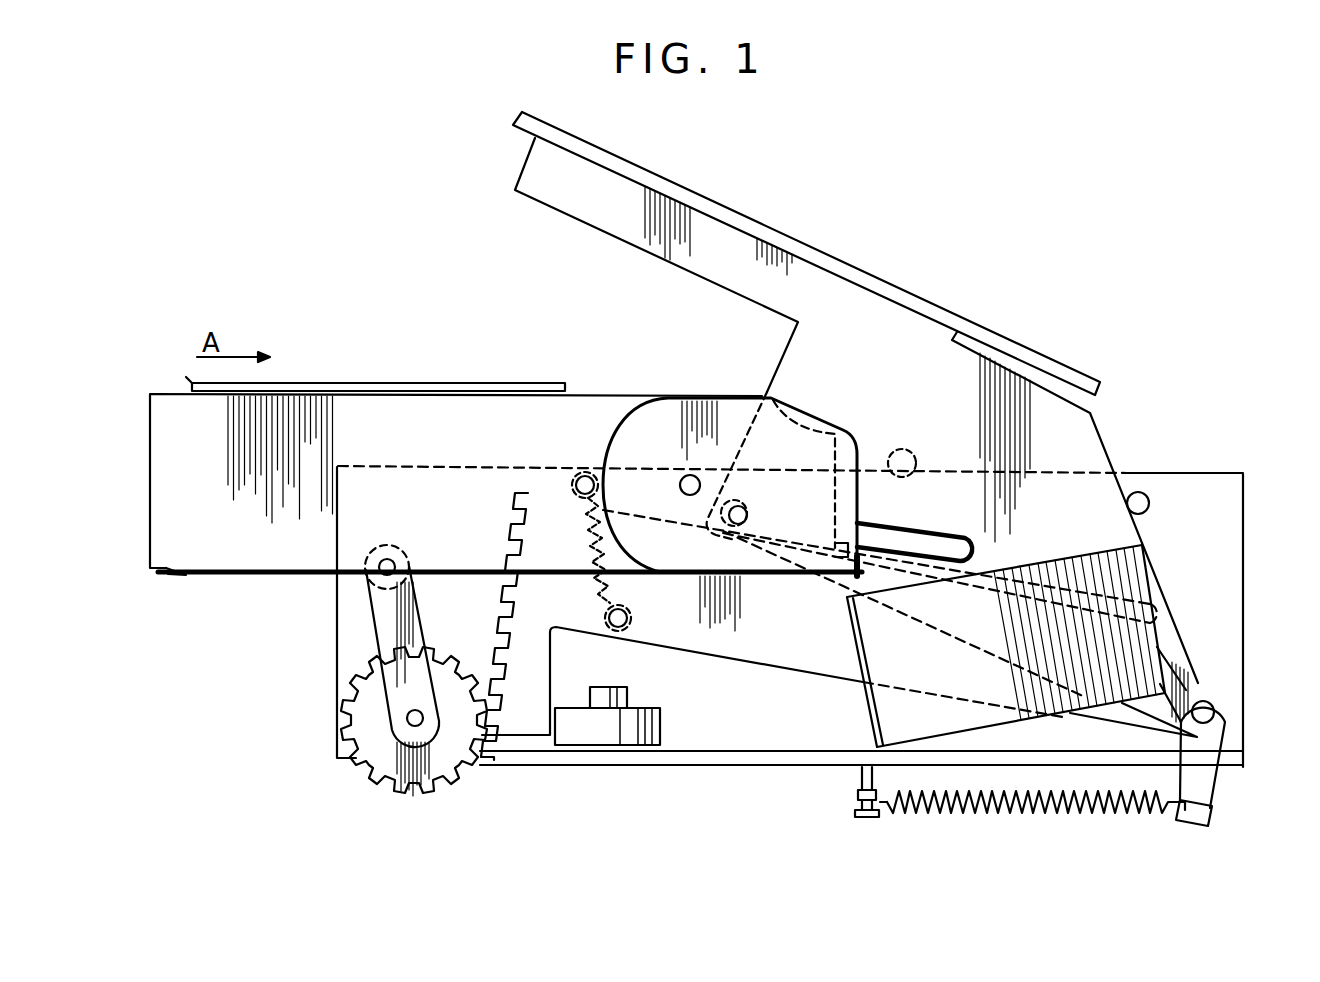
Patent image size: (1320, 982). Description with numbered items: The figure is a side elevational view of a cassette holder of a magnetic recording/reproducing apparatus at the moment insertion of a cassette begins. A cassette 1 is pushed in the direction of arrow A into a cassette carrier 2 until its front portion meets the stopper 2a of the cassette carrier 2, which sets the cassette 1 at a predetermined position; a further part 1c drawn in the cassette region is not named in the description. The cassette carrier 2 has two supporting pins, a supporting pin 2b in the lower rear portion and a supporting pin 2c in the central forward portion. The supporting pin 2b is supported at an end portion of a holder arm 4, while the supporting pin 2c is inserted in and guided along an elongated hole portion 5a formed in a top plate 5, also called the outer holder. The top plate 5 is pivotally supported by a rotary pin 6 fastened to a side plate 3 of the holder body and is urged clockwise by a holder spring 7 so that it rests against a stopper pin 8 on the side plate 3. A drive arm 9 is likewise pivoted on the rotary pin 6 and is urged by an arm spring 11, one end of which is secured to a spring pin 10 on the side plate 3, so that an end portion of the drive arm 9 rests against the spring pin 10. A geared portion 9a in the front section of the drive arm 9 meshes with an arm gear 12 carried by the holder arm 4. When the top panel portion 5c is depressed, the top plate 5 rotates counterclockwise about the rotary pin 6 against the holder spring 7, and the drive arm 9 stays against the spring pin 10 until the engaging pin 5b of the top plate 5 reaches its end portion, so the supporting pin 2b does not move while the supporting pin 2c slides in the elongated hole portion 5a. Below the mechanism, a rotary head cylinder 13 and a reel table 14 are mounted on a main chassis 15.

The cassette 1 is at (222, 566).
The cam member 1c is at (827, 437).
The cassette carrier 2 is at (372, 383).
The stopper 2a is at (865, 575).
The supporting pin 2b is at (372, 577).
The supporting pin 2c is at (742, 502).
The side plate 3 is at (703, 752).
The holder arm 4 is at (385, 630).
The top plate 5 is at (922, 325).
The elongated hole portion 5a is at (942, 542).
The engaging pin 5b is at (915, 452).
The top panel portion 5c is at (812, 240).
The rotary pin 6 is at (1216, 713).
The holder spring 7 is at (1117, 815).
The stopper pin 8 is at (1137, 490).
The drive arm 9 is at (697, 645).
The geared portion 9a is at (508, 548).
The spring pin 10 is at (583, 472).
The arm spring 11 is at (592, 541).
The arm gear 12 is at (468, 768).
The rotary head cylinder 13 is at (983, 720).
The reel table 14 is at (595, 745).
The main chassis 15 is at (1228, 770).